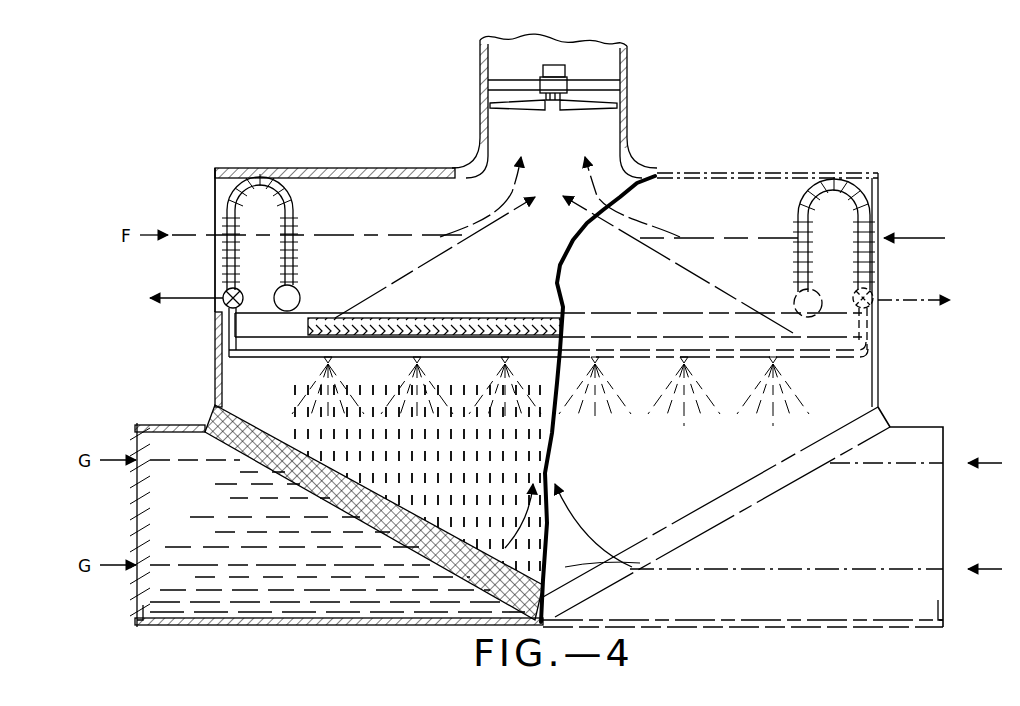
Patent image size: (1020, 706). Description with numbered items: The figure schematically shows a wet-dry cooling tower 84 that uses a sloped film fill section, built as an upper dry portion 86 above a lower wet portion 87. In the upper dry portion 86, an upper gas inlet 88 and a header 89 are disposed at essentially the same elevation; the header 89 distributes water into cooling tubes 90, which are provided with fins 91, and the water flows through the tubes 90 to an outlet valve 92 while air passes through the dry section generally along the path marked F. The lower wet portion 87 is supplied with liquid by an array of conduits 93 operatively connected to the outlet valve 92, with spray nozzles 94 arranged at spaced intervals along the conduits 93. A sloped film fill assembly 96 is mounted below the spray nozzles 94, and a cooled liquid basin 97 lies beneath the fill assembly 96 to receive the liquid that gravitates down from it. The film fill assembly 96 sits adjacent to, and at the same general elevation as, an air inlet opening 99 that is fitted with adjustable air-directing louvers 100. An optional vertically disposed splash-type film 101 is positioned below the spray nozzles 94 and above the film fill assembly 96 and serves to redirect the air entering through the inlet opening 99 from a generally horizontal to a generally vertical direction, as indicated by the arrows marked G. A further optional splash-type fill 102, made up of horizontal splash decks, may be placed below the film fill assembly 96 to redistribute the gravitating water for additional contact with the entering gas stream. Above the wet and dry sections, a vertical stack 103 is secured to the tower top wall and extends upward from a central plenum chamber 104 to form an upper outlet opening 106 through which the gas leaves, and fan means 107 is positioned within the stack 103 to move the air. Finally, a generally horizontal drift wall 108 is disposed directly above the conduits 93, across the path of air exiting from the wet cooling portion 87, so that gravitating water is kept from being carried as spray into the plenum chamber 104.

The wet-dry cooling tower 84 is at (340, 152).
The upper dry portion 86 is at (358, 274).
The lower wet portion 87 is at (212, 394).
The upper gas inlet 88 is at (213, 265).
The header 89 is at (301, 297).
The cooling tubes 90 is at (295, 208).
The fins 91 is at (298, 228).
The outlet valve 92 is at (230, 308).
The conduits 93 is at (548, 312).
The spray nozzles 94 is at (326, 360).
The sloped film fill assembly 96 is at (466, 574).
The cooled liquid basin 97 is at (345, 610).
The air inlet opening 99 is at (136, 521).
The adjustable air-directing louvers 100 is at (137, 440).
The vertically disposed splash-type film 101 is at (520, 478).
The splash-type fill 102 is at (290, 600).
The vertical stack 103 is at (628, 135).
The central plenum chamber 104 is at (552, 238).
The upper outlet opening 106 is at (580, 54).
The fan means 107 is at (586, 104).
The drift wall 108 is at (434, 311).